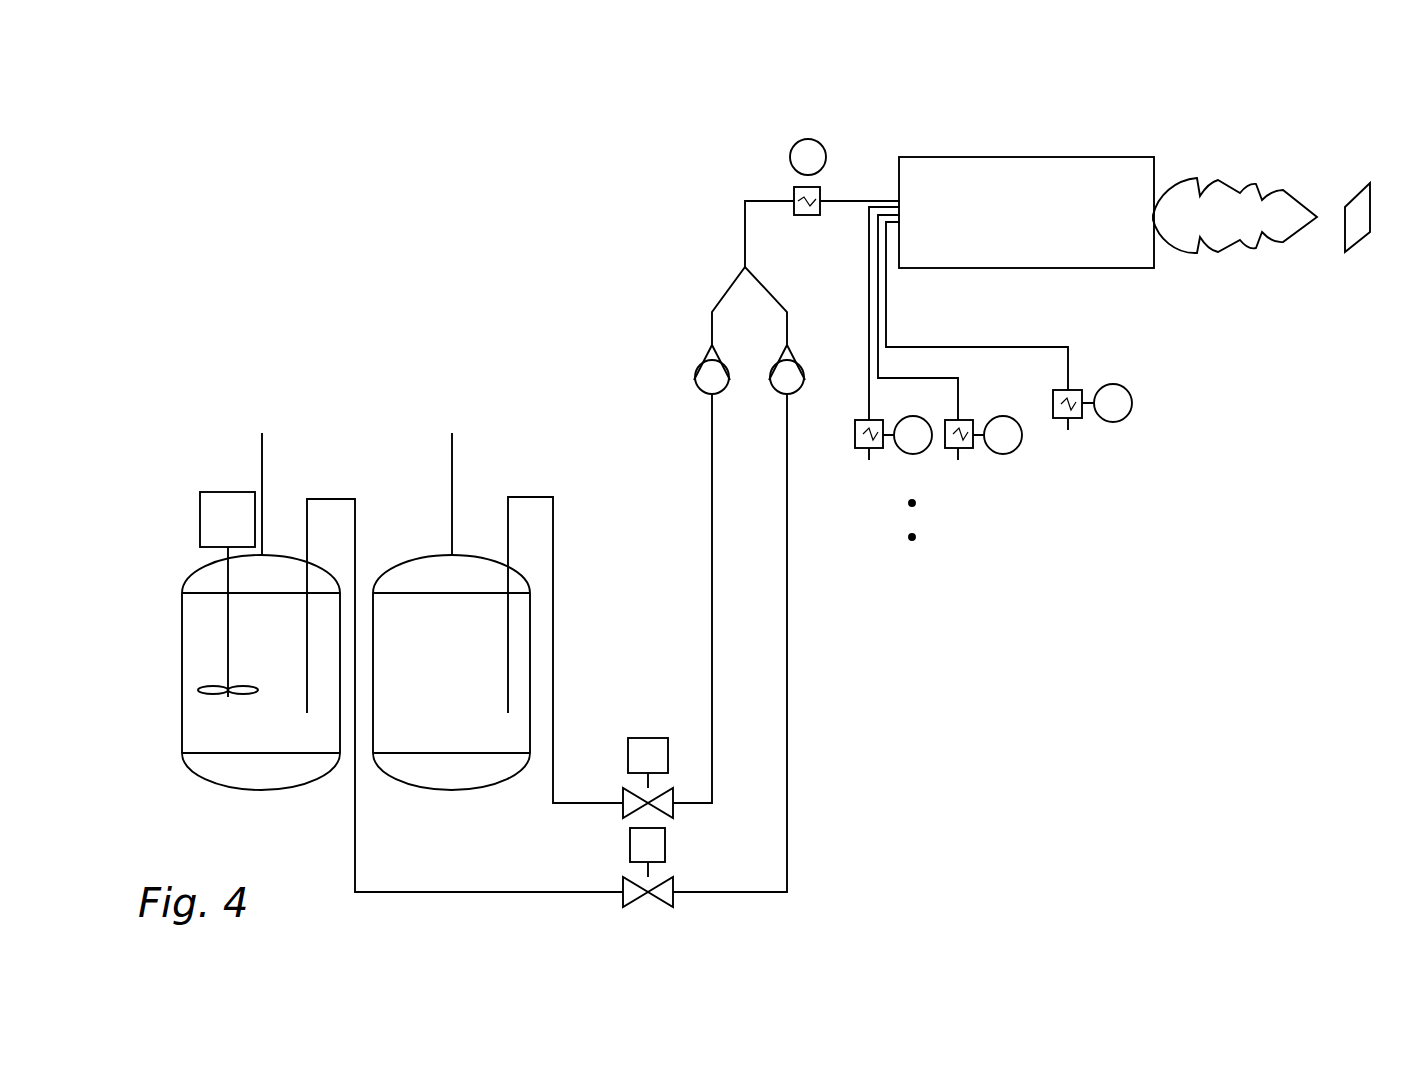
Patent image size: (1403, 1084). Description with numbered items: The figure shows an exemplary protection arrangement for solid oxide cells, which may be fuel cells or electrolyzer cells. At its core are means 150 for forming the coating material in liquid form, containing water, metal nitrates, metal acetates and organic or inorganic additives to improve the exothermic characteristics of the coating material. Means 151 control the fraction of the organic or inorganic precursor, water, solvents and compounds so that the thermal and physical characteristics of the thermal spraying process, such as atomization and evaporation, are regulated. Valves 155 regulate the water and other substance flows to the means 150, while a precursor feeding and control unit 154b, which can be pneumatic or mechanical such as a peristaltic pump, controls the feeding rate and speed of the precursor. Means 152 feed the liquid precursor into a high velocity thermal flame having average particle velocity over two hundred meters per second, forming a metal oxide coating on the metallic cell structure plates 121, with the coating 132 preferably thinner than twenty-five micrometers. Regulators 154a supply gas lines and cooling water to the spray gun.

The means for forming material 150 is at (468, 325).
The means for controlling fraction of precursor 151 is at (179, 651).
The means for forming metal oxide material 152 is at (1138, 128).
The gas line / cooling water regulators 154a is at (886, 488).
The precursor feeding and control unit 154b is at (768, 152).
The valves 155 is at (650, 873).
The cell structure plates 121 is at (1357, 267).
The substrate coating 132 is at (1361, 294).